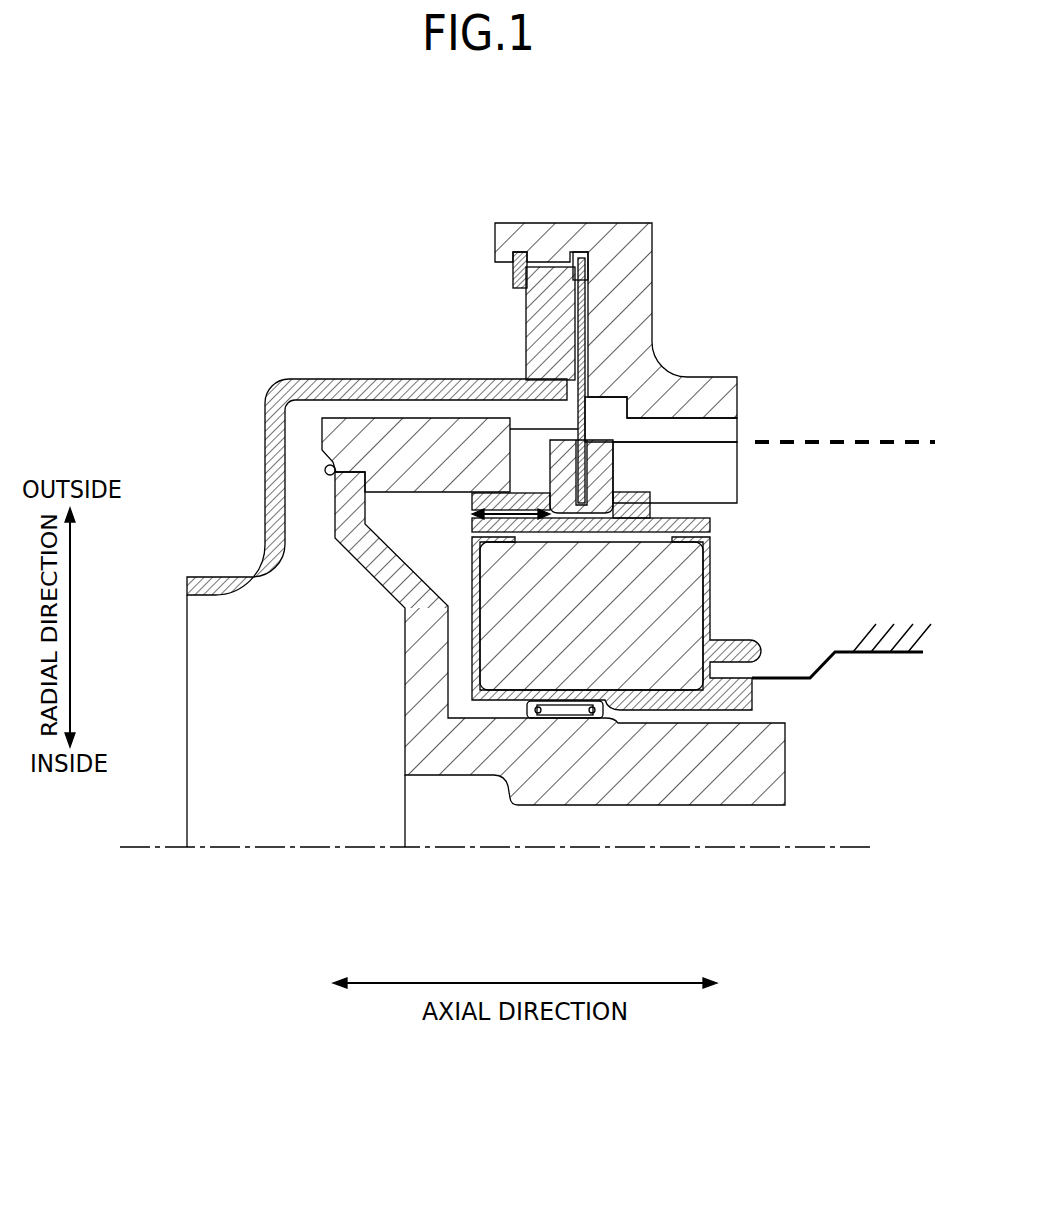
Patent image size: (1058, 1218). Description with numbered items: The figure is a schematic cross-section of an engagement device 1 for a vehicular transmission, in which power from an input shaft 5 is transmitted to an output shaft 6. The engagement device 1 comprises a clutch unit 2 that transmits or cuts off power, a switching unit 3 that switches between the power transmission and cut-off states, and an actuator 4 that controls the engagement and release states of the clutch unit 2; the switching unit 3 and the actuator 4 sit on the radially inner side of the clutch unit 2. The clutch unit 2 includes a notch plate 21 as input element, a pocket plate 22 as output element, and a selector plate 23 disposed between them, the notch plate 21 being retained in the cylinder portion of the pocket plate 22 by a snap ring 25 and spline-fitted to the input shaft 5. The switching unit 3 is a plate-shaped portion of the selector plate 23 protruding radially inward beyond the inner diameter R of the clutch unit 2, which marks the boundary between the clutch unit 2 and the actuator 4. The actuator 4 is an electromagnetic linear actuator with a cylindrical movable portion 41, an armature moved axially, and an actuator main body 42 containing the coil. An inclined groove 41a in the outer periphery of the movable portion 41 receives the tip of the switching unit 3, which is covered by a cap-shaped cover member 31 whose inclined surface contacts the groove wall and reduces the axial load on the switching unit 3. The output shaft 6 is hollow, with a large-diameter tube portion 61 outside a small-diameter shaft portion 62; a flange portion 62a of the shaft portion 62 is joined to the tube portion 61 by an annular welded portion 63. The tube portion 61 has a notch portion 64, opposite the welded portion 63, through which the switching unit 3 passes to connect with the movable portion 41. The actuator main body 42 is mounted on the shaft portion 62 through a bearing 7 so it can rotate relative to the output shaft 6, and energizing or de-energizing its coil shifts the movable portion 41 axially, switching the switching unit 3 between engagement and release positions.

The engagement device 1 is at (747, 128).
The clutch unit 2 is at (550, 170).
The switching unit 3 is at (599, 405).
The actuator 4 is at (808, 520).
The input shaft 5 is at (208, 564).
The output shaft 6 is at (801, 753).
The bearing 7 is at (565, 710).
The notch plate 21 is at (526, 315).
The pocket plate 22 is at (653, 307).
The selector plate 23 is at (580, 258).
The snap ring 25 is at (512, 272).
The cover member 31 is at (613, 460).
The movable portion 41 is at (710, 522).
The groove 41a is at (613, 478).
The actuator main body 42 is at (677, 588).
The tube portion 61 is at (380, 418).
The shaft portion 62 is at (643, 805).
The flange portion 62a is at (405, 650).
The welded portion 63 is at (325, 471).
The notch portion 64 is at (528, 455).
The inner diameter of the clutch unit R is at (898, 440).